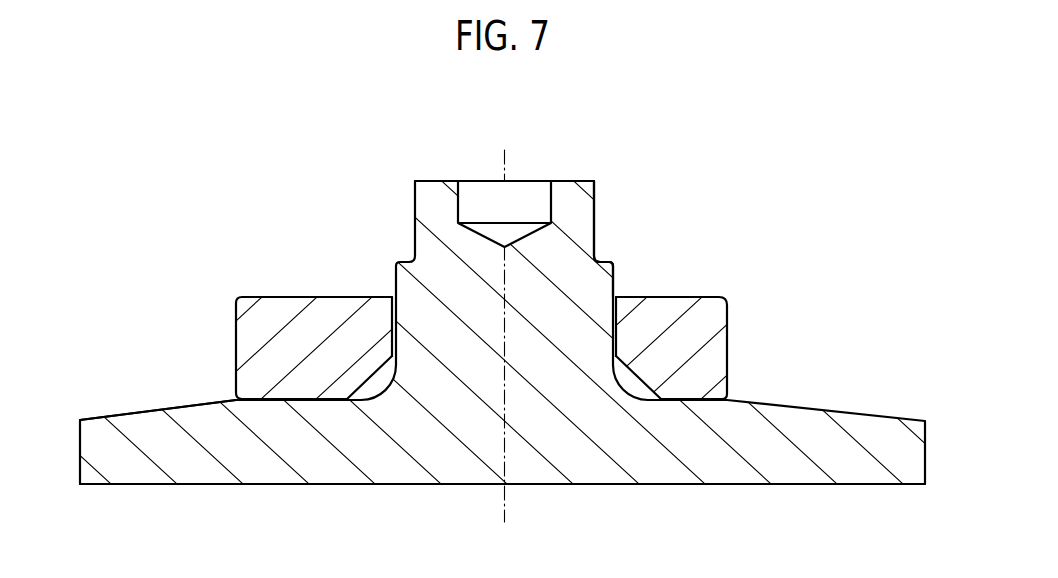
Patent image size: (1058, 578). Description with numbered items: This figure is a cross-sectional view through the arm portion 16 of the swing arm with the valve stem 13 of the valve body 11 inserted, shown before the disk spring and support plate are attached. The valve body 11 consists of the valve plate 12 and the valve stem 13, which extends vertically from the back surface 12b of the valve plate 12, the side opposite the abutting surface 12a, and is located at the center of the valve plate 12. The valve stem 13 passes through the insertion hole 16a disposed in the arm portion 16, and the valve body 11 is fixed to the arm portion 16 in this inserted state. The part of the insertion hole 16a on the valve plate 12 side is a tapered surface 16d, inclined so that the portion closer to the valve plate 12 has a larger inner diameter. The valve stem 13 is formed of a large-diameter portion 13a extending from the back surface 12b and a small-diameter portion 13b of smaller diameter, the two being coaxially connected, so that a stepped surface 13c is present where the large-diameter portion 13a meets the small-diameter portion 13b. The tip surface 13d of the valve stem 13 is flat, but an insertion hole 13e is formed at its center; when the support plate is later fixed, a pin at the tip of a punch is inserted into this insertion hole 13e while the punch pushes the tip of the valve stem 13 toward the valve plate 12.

The valve body 11 is at (493, 337).
The valve plate 12 is at (493, 352).
The abutting surface 12a is at (195, 485).
The back surface 12b is at (153, 411).
The valve stem 13 is at (493, 309).
The large-diameter portion 13a is at (615, 293).
The small-diameter portion 13b is at (595, 210).
The stepped surface 13c is at (607, 262).
The tip surface 13d is at (419, 181).
The insertion hole 13e is at (550, 202).
The arm portion 16 is at (510, 315).
The insertion hole 16a is at (397, 326).
The tapered surface 16d is at (373, 383).